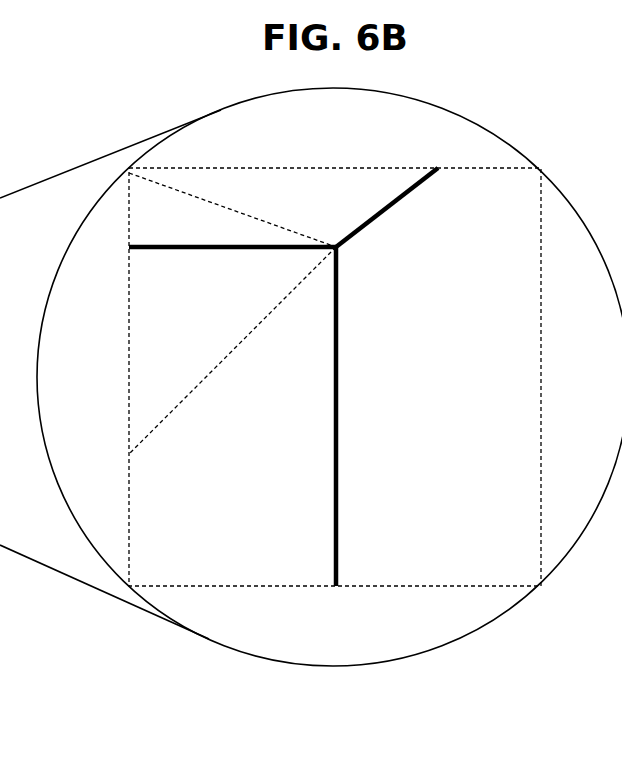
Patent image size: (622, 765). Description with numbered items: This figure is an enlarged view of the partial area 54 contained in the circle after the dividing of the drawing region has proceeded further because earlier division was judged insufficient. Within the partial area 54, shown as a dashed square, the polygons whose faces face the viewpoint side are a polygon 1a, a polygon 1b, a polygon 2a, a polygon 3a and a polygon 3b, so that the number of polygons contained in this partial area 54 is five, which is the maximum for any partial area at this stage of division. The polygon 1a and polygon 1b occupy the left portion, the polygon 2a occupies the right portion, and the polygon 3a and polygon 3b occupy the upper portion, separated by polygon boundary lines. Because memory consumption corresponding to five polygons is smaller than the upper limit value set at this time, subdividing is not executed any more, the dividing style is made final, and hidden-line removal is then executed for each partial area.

The partial area 54 is at (257, 586).
The polygon 1a is at (232, 350).
The polygon 1b is at (232, 416).
The polygon 2a is at (438, 377).
The polygon 3a is at (232, 210).
The polygon 3b is at (283, 207).